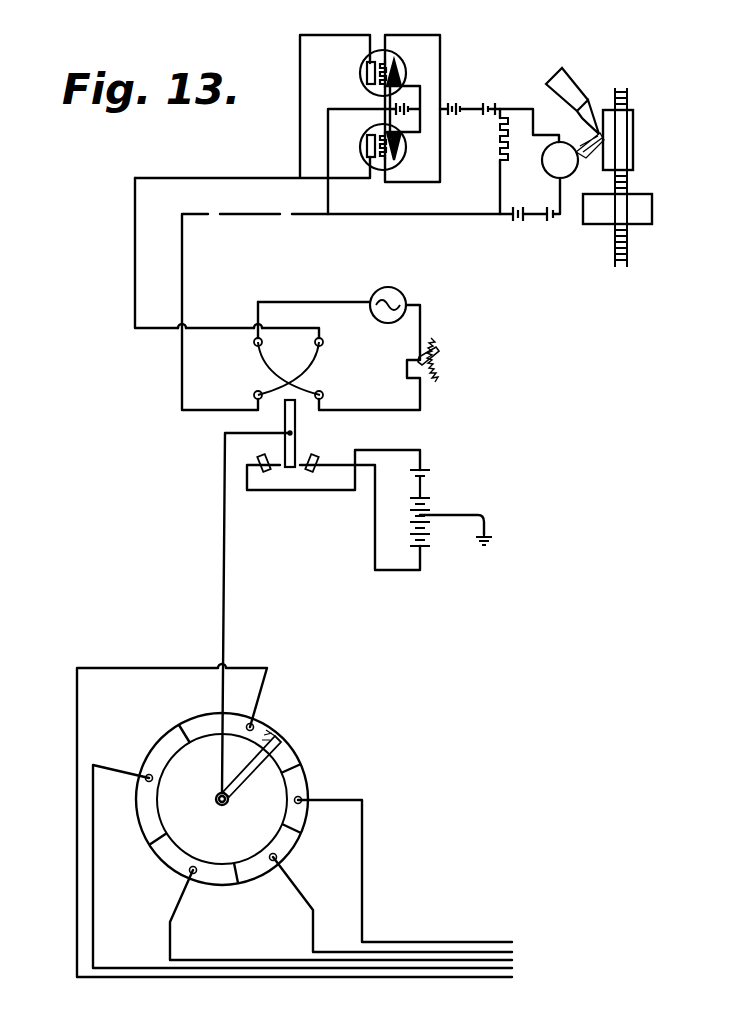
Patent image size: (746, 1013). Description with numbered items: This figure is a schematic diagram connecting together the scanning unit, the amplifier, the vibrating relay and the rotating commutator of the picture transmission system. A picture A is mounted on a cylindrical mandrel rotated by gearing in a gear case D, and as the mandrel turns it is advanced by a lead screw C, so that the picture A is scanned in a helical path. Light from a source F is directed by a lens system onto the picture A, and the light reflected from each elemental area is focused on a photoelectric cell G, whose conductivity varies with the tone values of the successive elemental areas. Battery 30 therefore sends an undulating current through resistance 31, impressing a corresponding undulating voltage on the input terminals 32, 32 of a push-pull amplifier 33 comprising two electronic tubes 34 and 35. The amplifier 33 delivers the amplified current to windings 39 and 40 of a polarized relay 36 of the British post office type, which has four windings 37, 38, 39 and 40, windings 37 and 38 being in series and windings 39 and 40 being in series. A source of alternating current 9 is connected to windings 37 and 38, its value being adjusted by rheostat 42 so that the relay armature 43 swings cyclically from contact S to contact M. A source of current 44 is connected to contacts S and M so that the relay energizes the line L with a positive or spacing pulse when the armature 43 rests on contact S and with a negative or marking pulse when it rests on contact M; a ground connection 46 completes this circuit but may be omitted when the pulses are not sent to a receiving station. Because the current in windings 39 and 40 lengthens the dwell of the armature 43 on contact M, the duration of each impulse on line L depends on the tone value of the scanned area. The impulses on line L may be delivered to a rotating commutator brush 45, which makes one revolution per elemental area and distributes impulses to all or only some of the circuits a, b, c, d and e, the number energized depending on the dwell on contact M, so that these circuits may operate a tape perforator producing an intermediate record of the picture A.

The source of alternating current 9 is at (396, 291).
The battery 30 is at (520, 232).
The resistance 31 is at (497, 166).
The input terminals 32 is at (497, 105).
The push-pull amplifier 33 is at (337, 109).
The electronic tube 34 is at (396, 54).
The electronic tube 35 is at (398, 156).
The polarized relay 36 is at (227, 405).
The relay winding 37 is at (266, 346).
The relay winding 38 is at (322, 392).
The relay winding 39 is at (323, 347).
The relay winding 40 is at (255, 392).
The rheostat 42 is at (432, 370).
The relay armature 43 is at (292, 414).
The source of current 44 is at (432, 494).
The rotating commutator brush 45 is at (274, 738).
The ground connection 46 is at (476, 512).
The picture A is at (618, 140).
The lead screw C is at (630, 183).
The gear case D is at (617, 209).
The light source F is at (572, 86).
The photoelectric cell G is at (544, 168).
The line L is at (224, 504).
The spacing contact S is at (263, 455).
The marking contact M is at (316, 455).
The circuit a is at (505, 939).
The circuit b is at (509, 952).
The circuit c is at (509, 960).
The circuit d is at (510, 968).
The circuit e is at (507, 979).